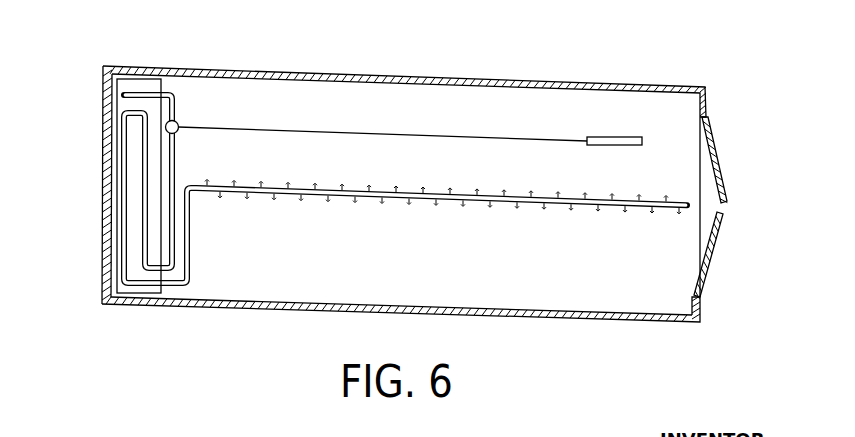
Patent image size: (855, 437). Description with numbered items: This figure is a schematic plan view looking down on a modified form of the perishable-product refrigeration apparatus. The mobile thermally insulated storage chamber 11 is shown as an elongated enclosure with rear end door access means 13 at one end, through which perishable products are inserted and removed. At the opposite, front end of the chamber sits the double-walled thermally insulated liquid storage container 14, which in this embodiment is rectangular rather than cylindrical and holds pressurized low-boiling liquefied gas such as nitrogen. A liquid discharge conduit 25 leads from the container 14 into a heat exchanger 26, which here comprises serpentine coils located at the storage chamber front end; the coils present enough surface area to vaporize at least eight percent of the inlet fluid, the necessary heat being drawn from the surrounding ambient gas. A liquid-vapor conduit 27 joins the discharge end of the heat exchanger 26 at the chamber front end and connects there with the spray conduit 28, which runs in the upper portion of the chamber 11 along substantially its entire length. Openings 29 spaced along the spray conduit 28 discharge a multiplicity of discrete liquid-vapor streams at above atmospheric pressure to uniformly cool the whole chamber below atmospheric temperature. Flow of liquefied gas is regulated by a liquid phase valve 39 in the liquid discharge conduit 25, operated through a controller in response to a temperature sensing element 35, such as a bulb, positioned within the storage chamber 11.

The storage chamber 11 is at (432, 72).
The rear doors 13 is at (713, 148).
The liquid storage container 14 is at (133, 163).
The liquid discharge conduit 25 is at (143, 92).
The heat exchanger 26 is at (121, 238).
The liquid-vapor conduit 27 is at (187, 268).
The spray conduit 28 is at (398, 198).
The openings 29 is at (290, 184).
The temperature sensing element 35 is at (617, 138).
The liquid phase valve 39 is at (178, 123).